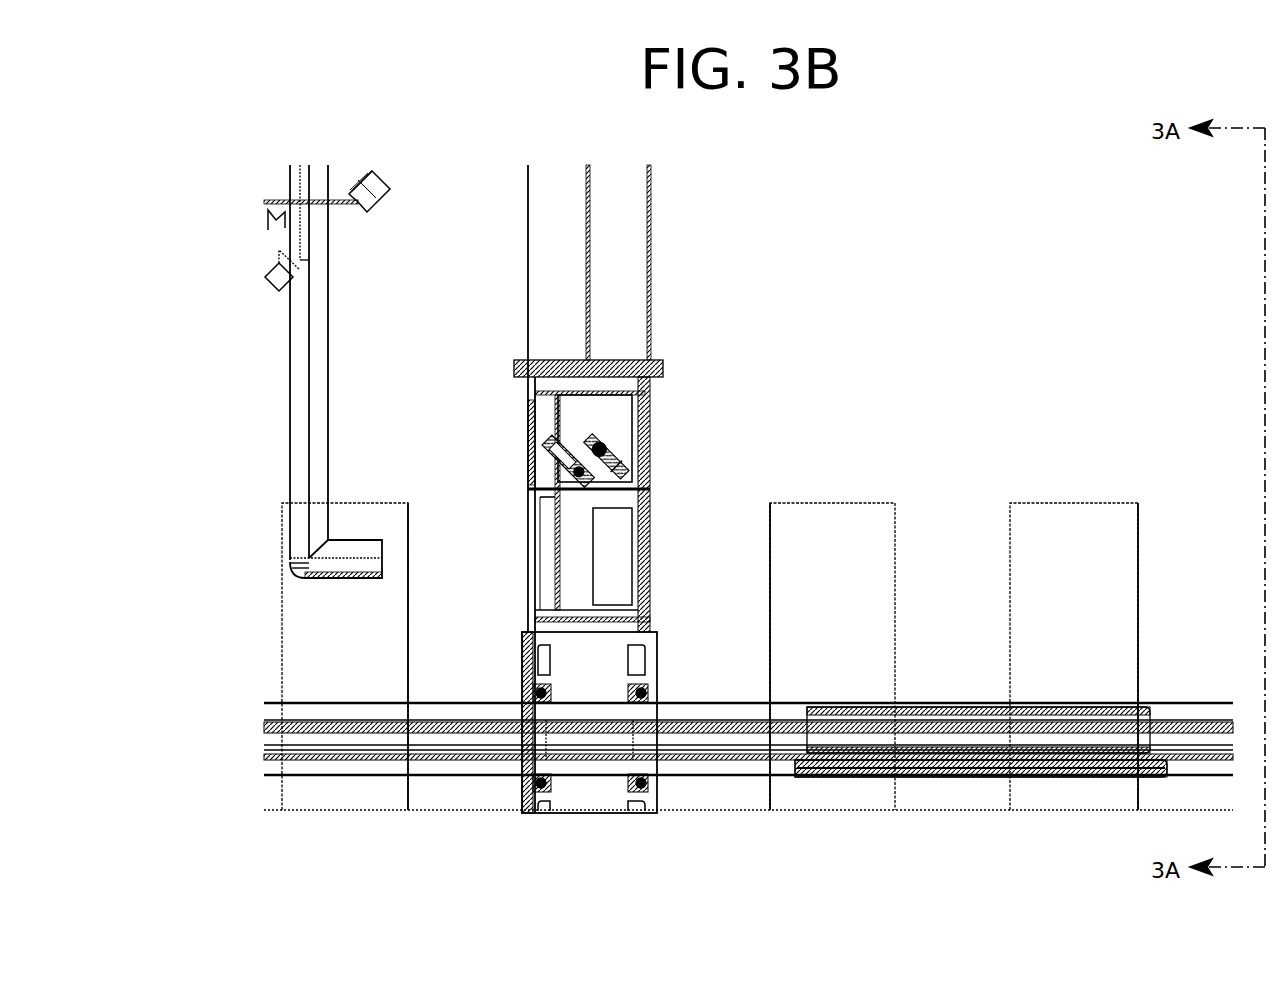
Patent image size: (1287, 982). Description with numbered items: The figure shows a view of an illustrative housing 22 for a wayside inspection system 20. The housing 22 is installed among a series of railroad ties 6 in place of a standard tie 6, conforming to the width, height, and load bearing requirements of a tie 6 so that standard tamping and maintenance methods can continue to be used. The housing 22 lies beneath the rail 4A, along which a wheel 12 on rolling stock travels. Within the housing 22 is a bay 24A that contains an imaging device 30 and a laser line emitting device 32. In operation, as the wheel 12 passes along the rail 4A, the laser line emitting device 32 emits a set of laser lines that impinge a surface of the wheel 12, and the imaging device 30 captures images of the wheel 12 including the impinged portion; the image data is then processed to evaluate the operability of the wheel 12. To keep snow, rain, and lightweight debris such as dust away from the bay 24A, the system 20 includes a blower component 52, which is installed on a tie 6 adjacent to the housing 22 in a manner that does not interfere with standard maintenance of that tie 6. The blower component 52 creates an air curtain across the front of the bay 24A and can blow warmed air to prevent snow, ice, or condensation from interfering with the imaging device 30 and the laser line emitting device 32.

The wayside inspection system 20 is at (785, 243).
The rail 4A is at (267, 741).
The railroad tie 6 is at (350, 630).
The wheel 12 is at (975, 747).
The blower component 52 is at (288, 435).
The inspection housing 22 is at (528, 565).
The bay 24A is at (533, 472).
The imaging device 30 is at (545, 442).
The laser line emitting device 32 is at (615, 448).